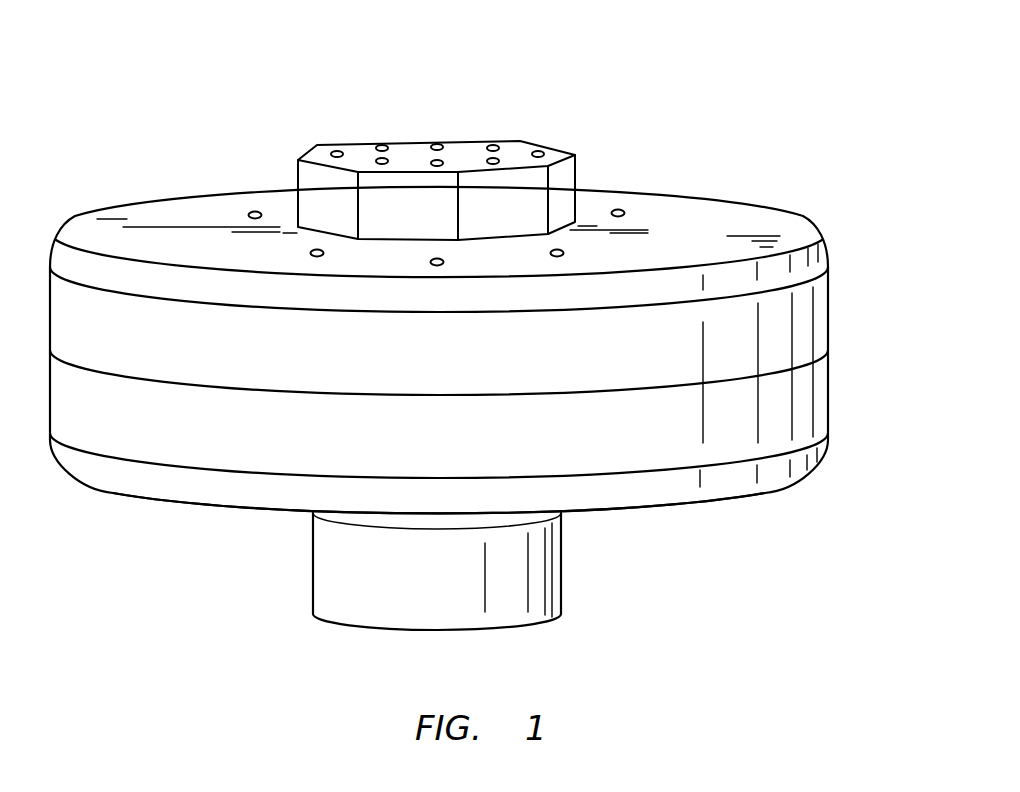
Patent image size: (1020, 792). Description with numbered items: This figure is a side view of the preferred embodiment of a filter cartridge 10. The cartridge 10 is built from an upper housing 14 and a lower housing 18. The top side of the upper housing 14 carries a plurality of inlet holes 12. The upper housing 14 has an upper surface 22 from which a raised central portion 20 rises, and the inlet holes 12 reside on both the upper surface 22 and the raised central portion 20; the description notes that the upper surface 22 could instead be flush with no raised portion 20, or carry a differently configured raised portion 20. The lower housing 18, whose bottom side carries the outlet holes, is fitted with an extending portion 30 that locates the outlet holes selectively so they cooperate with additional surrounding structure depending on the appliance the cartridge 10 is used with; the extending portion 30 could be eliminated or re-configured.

The filter cartridge 10 is at (823, 142).
The inlet holes 12 is at (617, 211).
The upper housing 14 is at (820, 285).
The lower housing 18 is at (165, 490).
The raised central portion 20 is at (298, 170).
The upper surface 22 is at (160, 218).
The extending portion 30 is at (313, 583).